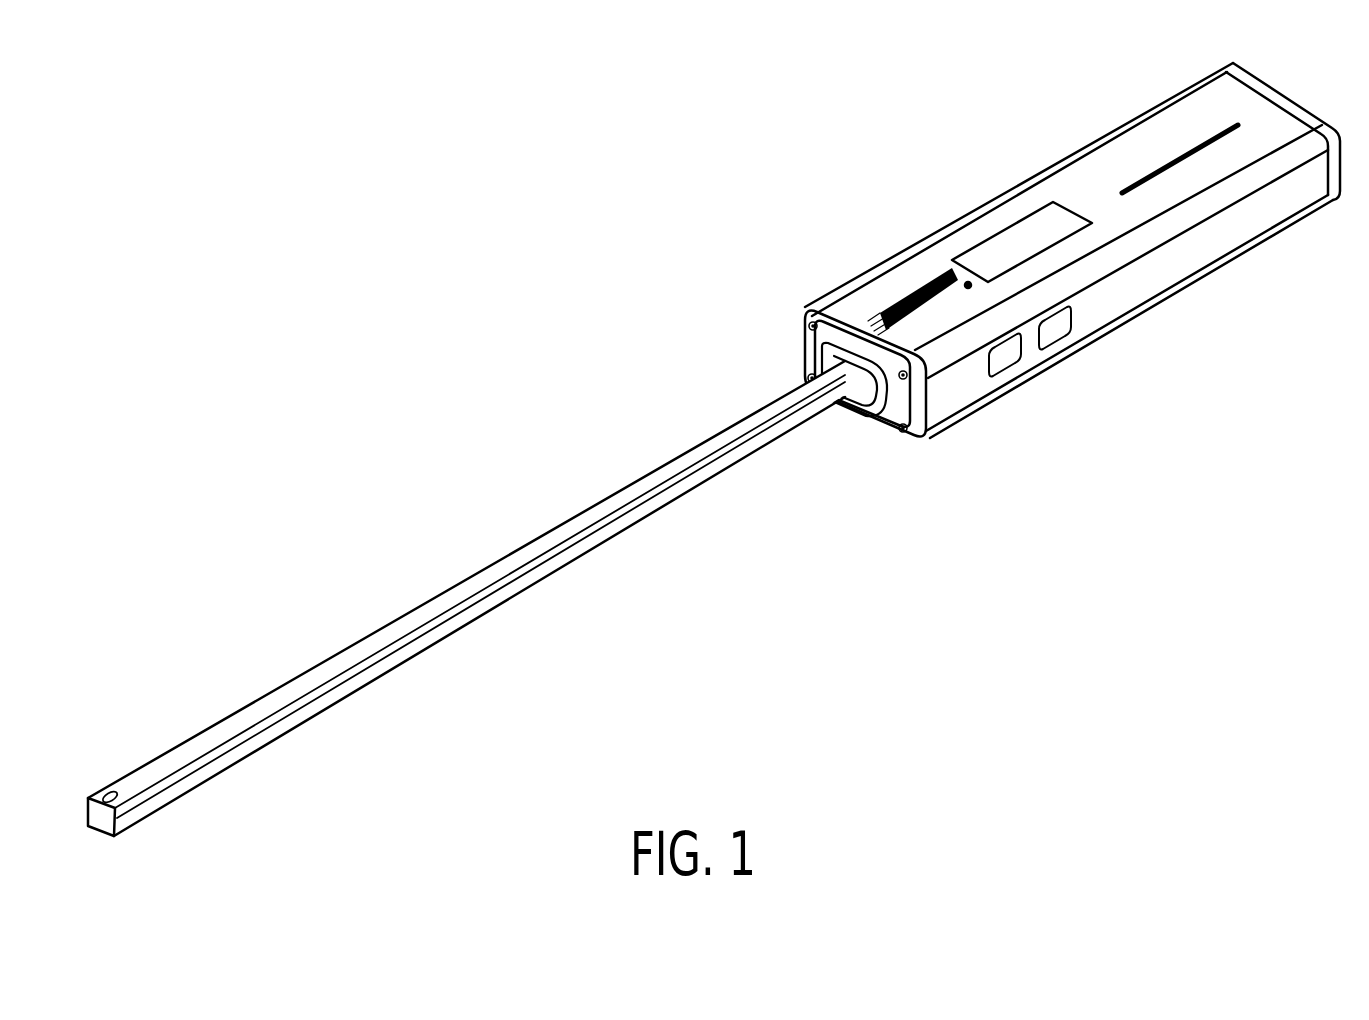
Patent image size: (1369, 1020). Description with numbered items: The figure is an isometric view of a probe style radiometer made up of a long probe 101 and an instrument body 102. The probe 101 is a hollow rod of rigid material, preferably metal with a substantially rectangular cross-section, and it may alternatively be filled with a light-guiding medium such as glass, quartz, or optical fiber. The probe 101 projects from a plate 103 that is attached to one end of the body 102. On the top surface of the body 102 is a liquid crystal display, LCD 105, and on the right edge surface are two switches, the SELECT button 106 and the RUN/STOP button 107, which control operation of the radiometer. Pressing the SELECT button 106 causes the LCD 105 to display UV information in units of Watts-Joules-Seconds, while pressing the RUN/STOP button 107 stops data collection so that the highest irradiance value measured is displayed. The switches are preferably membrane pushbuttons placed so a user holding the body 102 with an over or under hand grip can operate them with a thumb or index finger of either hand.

The probe 101 is at (447, 634).
The instrument body 102 is at (922, 173).
The plate 103 is at (870, 420).
The liquid crystal display (LCD) 105 is at (1292, 192).
The SELECT button 106 is at (993, 380).
The RUN/STOP button 107 is at (1075, 350).